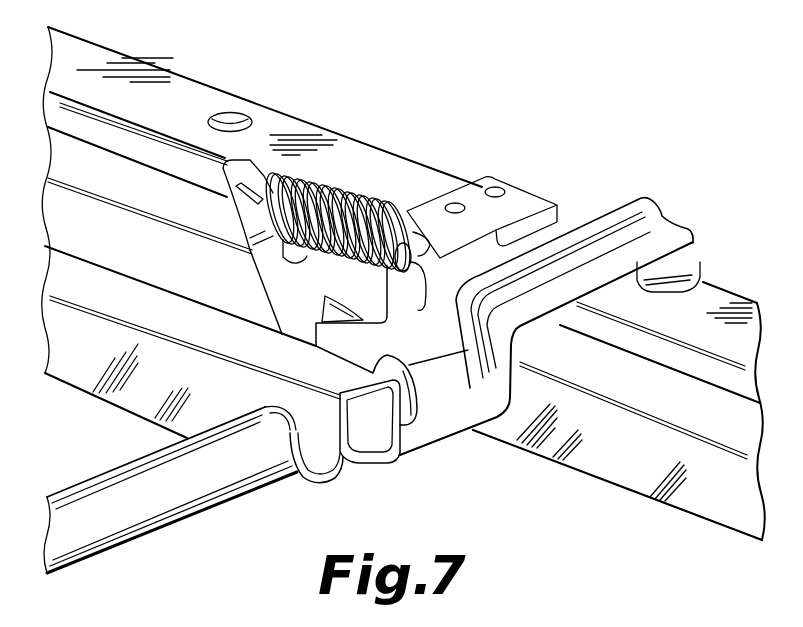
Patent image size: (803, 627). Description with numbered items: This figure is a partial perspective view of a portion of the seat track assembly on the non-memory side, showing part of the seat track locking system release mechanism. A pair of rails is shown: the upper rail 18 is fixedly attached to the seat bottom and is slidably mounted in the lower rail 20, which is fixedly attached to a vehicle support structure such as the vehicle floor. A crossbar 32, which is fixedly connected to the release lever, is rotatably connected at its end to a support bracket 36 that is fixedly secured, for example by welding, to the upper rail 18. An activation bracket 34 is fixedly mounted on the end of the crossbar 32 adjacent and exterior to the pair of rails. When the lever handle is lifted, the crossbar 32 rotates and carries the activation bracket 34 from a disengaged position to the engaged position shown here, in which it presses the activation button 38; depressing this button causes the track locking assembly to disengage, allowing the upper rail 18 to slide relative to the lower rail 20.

The upper rail 18 is at (387, 170).
The lower rail 20 is at (630, 457).
The crossbar 32 is at (170, 527).
The activation bracket 34 is at (615, 210).
The support bracket 36 is at (512, 202).
The activation button 38 is at (700, 270).